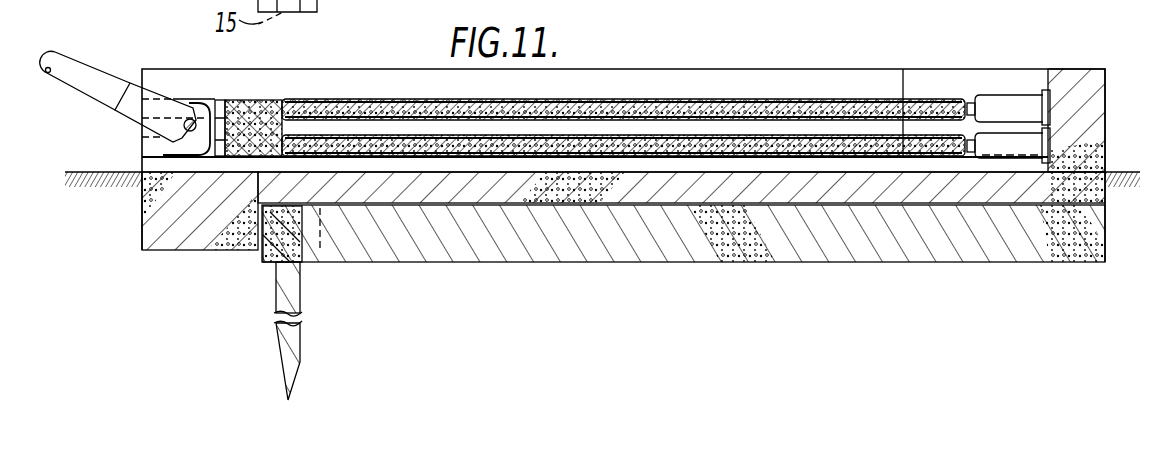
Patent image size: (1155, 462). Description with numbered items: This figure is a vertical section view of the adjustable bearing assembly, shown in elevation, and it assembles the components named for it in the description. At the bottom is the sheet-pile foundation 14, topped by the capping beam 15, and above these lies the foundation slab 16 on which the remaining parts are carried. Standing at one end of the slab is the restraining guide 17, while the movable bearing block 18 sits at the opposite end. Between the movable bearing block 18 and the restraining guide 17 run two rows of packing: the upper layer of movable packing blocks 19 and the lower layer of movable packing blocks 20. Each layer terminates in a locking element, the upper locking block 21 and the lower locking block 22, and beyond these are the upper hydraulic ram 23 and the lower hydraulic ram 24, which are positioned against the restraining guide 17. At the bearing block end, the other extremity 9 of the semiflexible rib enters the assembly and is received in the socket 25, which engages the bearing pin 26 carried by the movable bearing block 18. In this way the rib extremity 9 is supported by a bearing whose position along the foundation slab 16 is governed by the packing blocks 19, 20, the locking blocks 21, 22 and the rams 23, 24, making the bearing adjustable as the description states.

The other extremity of the semiflexible rib 9 is at (102, 84).
The sheet-pile foundation 14 is at (300, 333).
The capping beam 15 is at (277, 254).
The foundation slab 16 is at (1078, 237).
The restraining guide 17 is at (1087, 123).
The movable bearing block 18 is at (250, 100).
The upper layer of movable packing blocks 19 is at (765, 100).
The lower layer of movable packing blocks 20 is at (868, 147).
The upper locking block 21 is at (930, 108).
The lower locking block 22 is at (947, 147).
The upper hydraulic ram 23 is at (1003, 105).
The lower hydraulic ram 24 is at (1013, 147).
The socket 25 is at (135, 88).
The bearing pin 26 is at (170, 135).